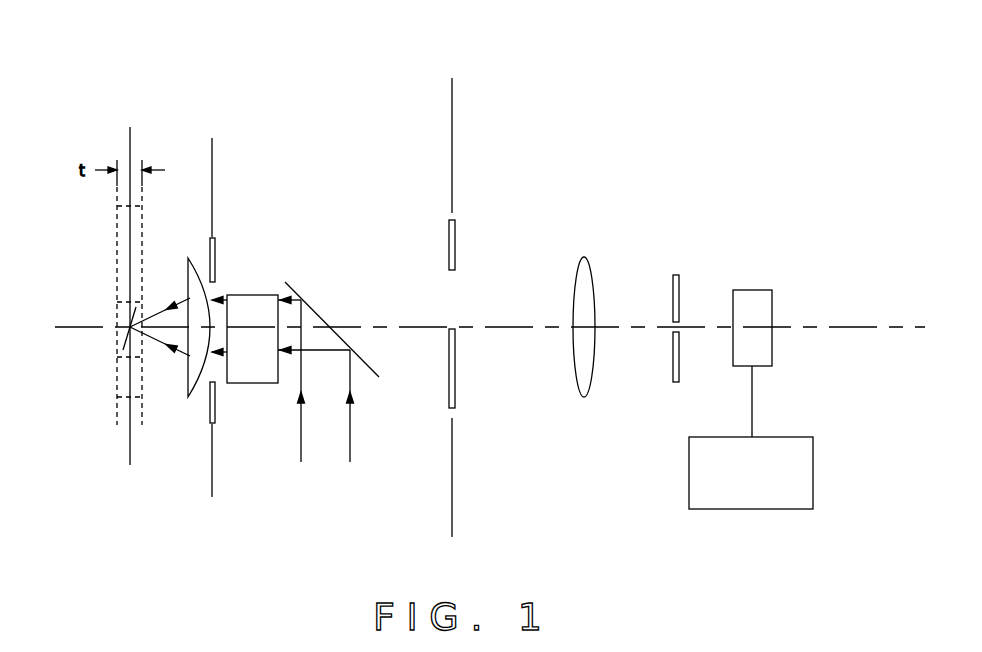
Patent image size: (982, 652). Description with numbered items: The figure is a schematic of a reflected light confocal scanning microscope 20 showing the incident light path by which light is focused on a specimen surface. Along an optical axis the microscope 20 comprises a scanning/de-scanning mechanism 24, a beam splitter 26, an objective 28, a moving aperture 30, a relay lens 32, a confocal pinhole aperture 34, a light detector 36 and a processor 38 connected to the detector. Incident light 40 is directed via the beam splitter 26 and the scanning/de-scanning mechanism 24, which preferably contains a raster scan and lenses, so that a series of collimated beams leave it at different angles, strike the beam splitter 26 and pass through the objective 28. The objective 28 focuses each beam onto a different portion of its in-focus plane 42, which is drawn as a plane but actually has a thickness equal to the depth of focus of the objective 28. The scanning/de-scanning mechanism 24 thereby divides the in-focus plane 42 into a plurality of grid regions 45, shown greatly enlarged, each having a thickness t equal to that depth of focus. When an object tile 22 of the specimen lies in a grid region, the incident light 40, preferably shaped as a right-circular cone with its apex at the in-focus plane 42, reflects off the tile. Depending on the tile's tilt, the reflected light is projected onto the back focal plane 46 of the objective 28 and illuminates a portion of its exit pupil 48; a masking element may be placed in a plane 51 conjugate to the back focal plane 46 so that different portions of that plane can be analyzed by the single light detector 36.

The reflected light confocal scanning microscope 20 is at (517, 193).
The object tile 22 is at (126, 318).
The scanning/de-scanning mechanism 24 is at (253, 365).
The beam splitter 26 is at (292, 288).
The objective 28 is at (190, 258).
The moving aperture 30 is at (455, 245).
The relay lens 32 is at (591, 270).
The confocal pinhole aperture 34 is at (679, 285).
The light detector 36 is at (772, 300).
The processor 38 is at (813, 455).
The incident light 40 is at (175, 346).
The in-focus plane 42 is at (130, 447).
The grid regions 45 is at (117, 266).
The back focal plane 46 is at (212, 168).
The exit pupil 48 is at (215, 285).
The plane conjugate to the back focal plane 51 is at (452, 497).